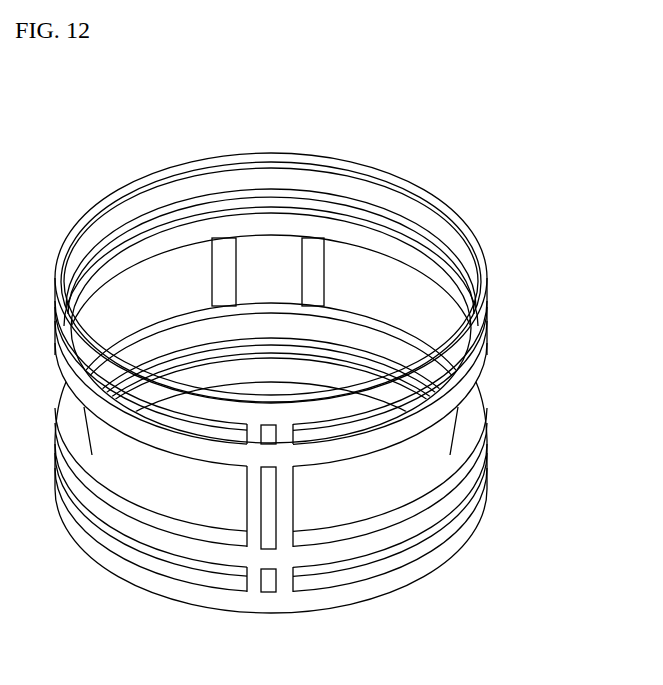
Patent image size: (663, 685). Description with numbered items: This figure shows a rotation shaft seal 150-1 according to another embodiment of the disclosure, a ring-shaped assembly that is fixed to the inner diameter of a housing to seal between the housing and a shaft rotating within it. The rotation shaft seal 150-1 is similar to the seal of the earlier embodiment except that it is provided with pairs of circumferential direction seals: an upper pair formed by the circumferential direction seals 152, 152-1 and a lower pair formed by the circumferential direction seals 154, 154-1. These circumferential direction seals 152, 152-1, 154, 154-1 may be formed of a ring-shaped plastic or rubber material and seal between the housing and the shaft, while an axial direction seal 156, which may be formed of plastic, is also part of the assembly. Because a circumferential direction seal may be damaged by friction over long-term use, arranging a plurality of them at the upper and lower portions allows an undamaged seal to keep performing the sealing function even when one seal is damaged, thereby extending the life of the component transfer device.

The rotation shaft seal 150-1 is at (100, 105).
The circumferential direction seal 152 is at (488, 358).
The circumferential direction seal 152-1 is at (488, 312).
The circumferential direction seal 154 is at (488, 454).
The circumferential direction seal 154-1 is at (488, 501).
The axial direction seal 156 is at (287, 507).